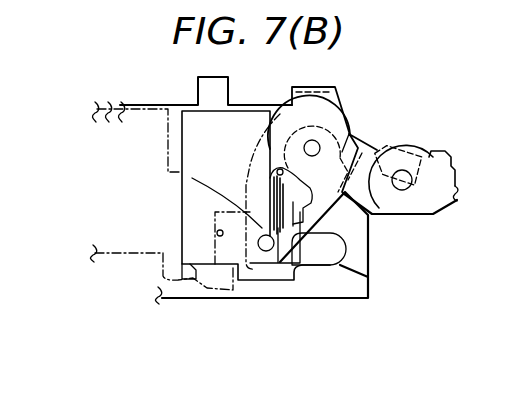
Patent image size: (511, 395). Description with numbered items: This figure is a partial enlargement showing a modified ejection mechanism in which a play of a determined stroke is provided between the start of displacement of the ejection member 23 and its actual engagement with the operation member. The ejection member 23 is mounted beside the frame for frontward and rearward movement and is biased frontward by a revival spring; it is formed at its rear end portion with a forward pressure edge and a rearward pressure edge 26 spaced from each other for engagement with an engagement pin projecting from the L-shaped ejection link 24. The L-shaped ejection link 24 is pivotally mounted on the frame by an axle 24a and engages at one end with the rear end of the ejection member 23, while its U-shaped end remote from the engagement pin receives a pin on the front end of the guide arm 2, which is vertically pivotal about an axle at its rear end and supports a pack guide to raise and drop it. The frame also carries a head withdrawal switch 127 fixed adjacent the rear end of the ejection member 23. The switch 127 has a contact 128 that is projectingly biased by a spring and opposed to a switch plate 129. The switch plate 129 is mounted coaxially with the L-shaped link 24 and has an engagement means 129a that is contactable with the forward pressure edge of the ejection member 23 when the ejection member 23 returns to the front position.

The guide arm 2 is at (434, 211).
The ejection member 23 is at (137, 122).
The L-shaped ejection link 24 is at (302, 116).
The axle 24a is at (349, 134).
The rearward pressure edge 26 is at (405, 174).
The head withdrawal switch 127 is at (195, 118).
The contact 128 is at (276, 206).
The switch plate 129 is at (319, 144).
The engagement means 129a is at (302, 210).